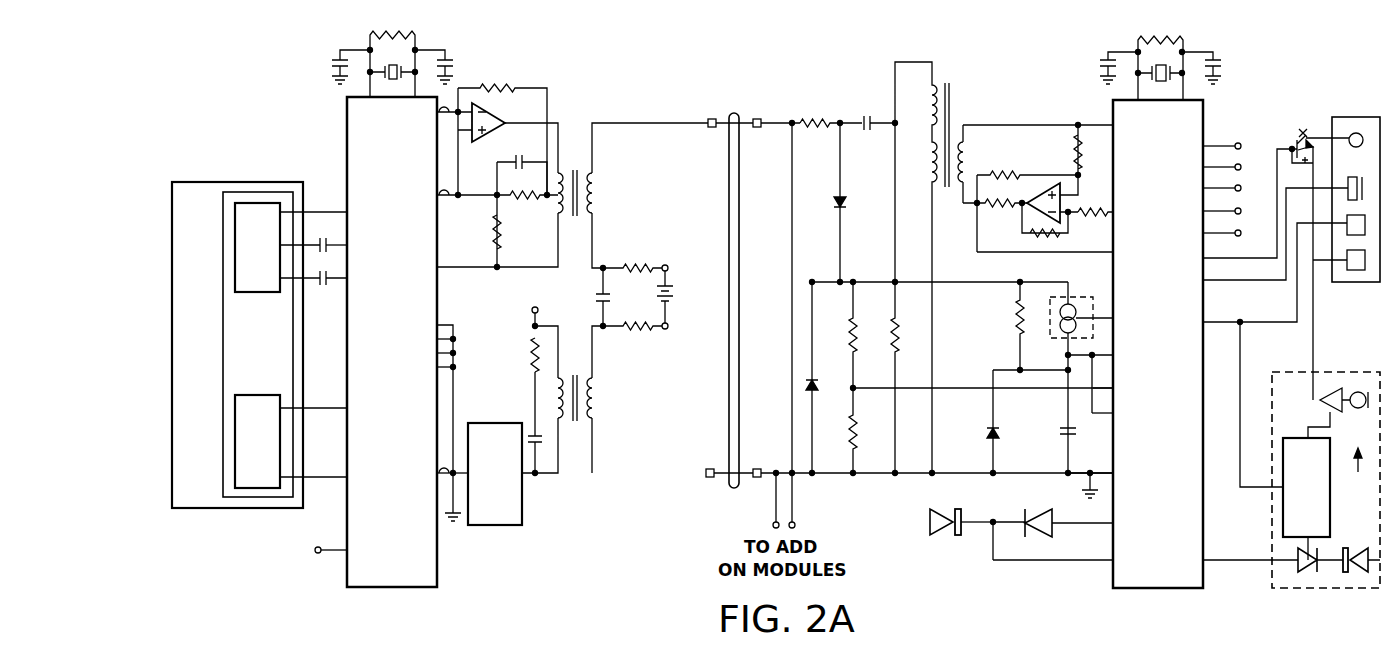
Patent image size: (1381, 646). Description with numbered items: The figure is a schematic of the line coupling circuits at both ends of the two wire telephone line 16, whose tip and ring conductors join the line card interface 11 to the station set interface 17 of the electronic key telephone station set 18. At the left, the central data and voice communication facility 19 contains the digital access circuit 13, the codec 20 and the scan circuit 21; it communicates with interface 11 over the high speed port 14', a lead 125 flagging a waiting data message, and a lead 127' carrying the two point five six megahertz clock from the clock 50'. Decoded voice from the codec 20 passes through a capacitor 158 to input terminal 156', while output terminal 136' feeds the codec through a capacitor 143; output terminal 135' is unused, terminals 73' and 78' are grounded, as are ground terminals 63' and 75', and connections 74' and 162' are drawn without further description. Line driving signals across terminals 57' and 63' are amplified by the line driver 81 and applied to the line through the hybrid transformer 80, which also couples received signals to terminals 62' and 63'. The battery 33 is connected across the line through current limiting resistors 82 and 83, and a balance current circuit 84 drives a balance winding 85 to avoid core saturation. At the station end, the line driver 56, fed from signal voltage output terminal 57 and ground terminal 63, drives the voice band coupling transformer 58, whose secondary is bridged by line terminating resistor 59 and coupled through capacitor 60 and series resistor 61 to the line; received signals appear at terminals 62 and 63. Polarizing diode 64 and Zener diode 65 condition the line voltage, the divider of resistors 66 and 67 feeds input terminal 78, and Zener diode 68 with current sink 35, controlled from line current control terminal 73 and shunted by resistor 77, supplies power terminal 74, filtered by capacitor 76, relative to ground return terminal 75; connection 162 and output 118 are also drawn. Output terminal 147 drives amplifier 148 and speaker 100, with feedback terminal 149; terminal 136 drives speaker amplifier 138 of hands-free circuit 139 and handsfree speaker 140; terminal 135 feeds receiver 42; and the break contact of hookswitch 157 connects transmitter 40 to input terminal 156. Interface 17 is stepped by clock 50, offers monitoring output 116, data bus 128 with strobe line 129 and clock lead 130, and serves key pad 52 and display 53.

The central data and voice communication facility 19 is at (200, 172).
The digital access circuit 13 is at (238, 192).
The codec 20 is at (270, 203).
The scan circuit 21 is at (238, 488).
The line card interface 11 is at (386, 592).
The lead 127' is at (341, 215).
The capacitor 158 is at (330, 240).
The input terminal 156' is at (365, 261).
The output terminal 136' is at (342, 290).
The capacitor 143 is at (323, 288).
The input/output port 14' is at (313, 388).
The lead 125 is at (328, 476).
The output terminal 135' is at (301, 555).
The clock 50' is at (399, 60).
The signal voltage output terminal 57' is at (427, 120).
The ground terminal 63' is at (440, 197).
The line driver 81 is at (486, 145).
The terminal 62' is at (497, 212).
The hybrid transformer 80 is at (578, 165).
The line current control terminal 73' is at (464, 411).
The control line 74' is at (465, 337).
The input terminal 78' is at (465, 359).
The control line 162' is at (473, 380).
The ground terminal 75' is at (429, 472).
The balance current circuit 84 is at (522, 502).
The balance winding 85 is at (555, 398).
The current limiting resistor 83 is at (630, 264).
The current limiting resistor 82 is at (634, 330).
The battery 33 is at (676, 300).
The two wire telephone line 16 is at (729, 114).
The series resistor 61 is at (817, 120).
The capacitor 60 is at (868, 116).
The polarizing diode 64 is at (846, 205).
The Zener diode 65 is at (830, 384).
The resistor 66 is at (872, 336).
The resistor 67 is at (862, 428).
The line terminating resistor 59 is at (900, 342).
The voice band coupling transformer 58 is at (956, 140).
The line driver 56 is at (1046, 182).
The ground terminal 63 is at (1038, 107).
The signal voltage output terminal 57 is at (1118, 213).
The terminal 62 is at (1068, 253).
The current sink 35 is at (1094, 301).
The line current control terminal 73 is at (1117, 319).
The resistor 77 is at (1018, 332).
The capacitor 76 is at (1058, 436).
The Zener diode 68 is at (986, 436).
The power supply terminal 74 is at (1113, 379).
The input terminal 78 is at (1126, 389).
The control line 162 is at (1131, 414).
The ground return terminal 75 is at (1113, 480).
The speaker 100 is at (946, 536).
The amplifier 148 is at (1036, 514).
The output terminal 147 is at (1117, 525).
The input terminal 149 is at (1117, 562).
The station set interface 17 is at (1108, 586).
The clock 50 is at (1162, 61).
The output 116 is at (1235, 146).
The output terminal 118 is at (1233, 168).
The bus 128 is at (1233, 189).
The line 129 is at (1233, 212).
The lead 130 is at (1233, 234).
The input terminal 156 is at (1250, 215).
The output terminal 135 is at (1275, 247).
The electronic key telephone station set 18 is at (1330, 103).
The hookswitch 157 is at (1318, 136).
The telephone transmitter 40 is at (1356, 132).
The receiver 42 is at (1363, 270).
The key pad 52 is at (1334, 276).
The liquid crystal display 53 is at (1326, 459).
The hands-free circuit 139 is at (1356, 477).
The terminal 136 is at (1250, 577).
The speaker amplifier 138 is at (1312, 574).
The handsfree speaker 140 is at (1360, 576).